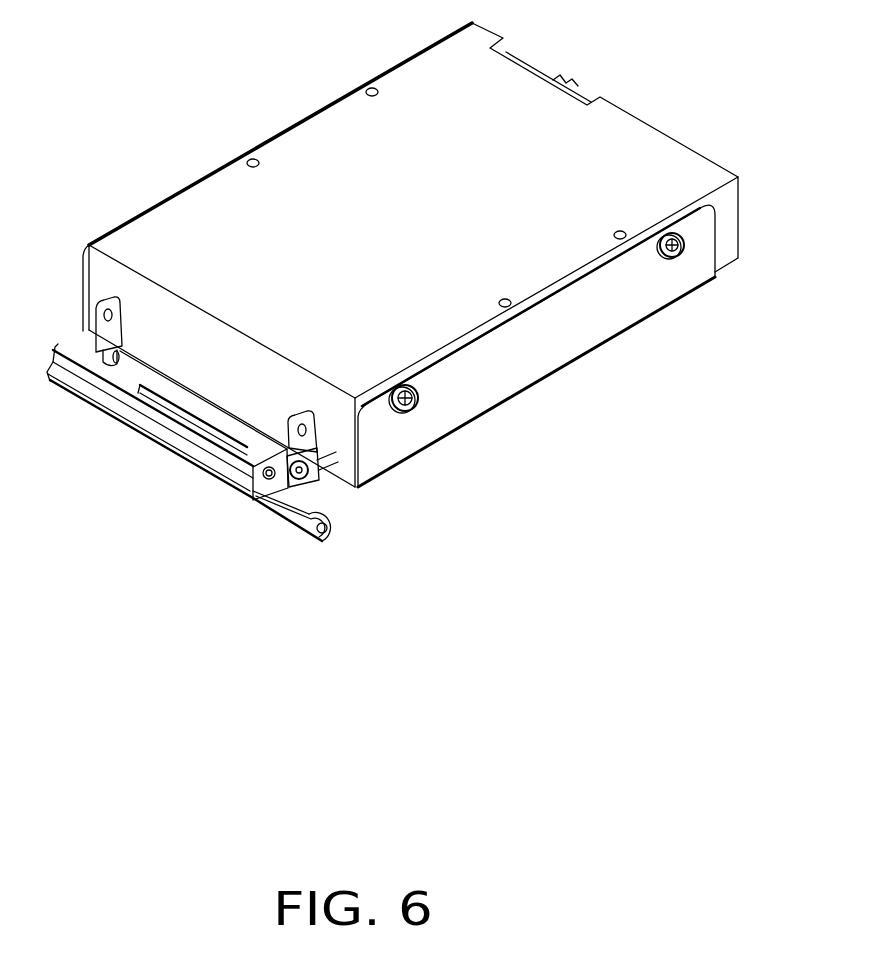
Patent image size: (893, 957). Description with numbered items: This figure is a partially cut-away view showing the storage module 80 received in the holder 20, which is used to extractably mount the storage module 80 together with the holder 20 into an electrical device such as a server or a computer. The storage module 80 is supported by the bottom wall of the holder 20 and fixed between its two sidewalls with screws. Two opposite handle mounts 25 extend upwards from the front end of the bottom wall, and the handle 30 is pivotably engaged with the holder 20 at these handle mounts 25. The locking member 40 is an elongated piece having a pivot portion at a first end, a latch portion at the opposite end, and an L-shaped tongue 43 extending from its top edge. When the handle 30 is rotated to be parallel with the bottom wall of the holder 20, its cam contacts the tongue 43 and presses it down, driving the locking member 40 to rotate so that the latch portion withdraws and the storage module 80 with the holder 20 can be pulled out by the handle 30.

The storage module 80 is at (618, 143).
The holder 20 is at (538, 352).
The handle 30 is at (97, 395).
The handle mount 25 is at (293, 437).
The tongue 43 is at (312, 492).
The locking member 40 is at (283, 508).